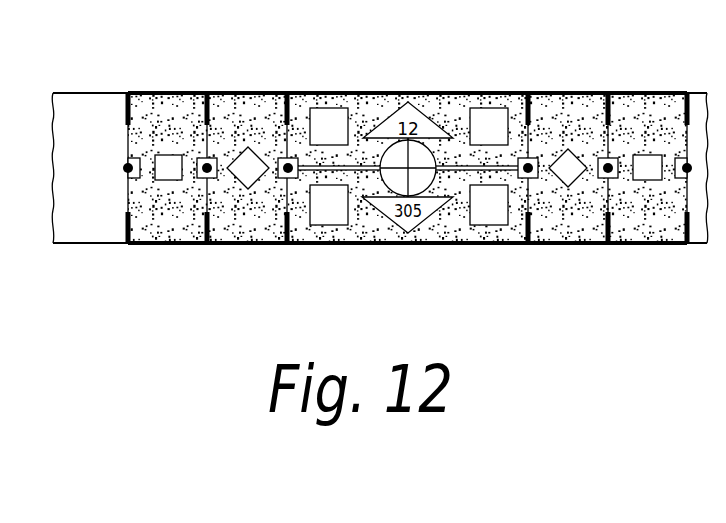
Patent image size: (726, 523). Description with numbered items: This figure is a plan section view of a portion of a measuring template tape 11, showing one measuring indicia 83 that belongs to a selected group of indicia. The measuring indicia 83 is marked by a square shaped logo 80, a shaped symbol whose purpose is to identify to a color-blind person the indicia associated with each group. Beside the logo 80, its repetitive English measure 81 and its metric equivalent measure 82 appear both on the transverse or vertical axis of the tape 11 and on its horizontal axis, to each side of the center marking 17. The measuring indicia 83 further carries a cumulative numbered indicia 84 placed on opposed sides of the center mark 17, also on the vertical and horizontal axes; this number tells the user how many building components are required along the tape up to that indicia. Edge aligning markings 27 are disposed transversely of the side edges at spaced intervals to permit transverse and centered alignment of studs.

The tape 11 is at (87, 207).
The center marking 17 is at (423, 163).
The edge aligning markings 27 is at (127, 118).
The shaped symbol 80 is at (168, 157).
The repetitive measure 81 is at (343, 118).
The metric measure 82 is at (326, 225).
The measuring indicia 83 is at (503, 83).
The cumulative numbered indicia 84 is at (258, 173).